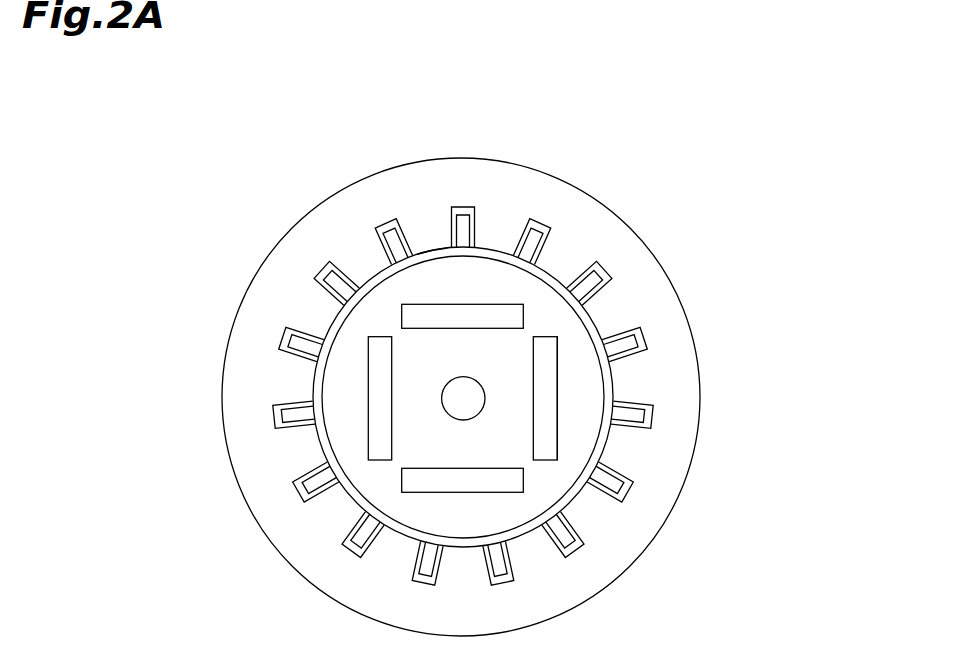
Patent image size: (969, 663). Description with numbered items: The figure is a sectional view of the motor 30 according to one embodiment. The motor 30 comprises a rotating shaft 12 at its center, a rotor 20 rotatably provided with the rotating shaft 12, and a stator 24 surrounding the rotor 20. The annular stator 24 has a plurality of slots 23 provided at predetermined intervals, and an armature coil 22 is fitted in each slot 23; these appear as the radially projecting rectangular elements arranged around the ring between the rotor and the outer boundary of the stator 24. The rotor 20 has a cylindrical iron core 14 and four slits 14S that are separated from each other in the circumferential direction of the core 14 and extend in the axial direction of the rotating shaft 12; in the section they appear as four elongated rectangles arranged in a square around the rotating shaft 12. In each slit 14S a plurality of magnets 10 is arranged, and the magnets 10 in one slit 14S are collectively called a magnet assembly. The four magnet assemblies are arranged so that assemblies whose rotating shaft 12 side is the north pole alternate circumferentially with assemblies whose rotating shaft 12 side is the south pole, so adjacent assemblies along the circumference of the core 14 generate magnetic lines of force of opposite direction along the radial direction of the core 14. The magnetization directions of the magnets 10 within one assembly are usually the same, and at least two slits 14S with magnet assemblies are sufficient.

The magnet 10 is at (548, 402).
The rotating shaft 12 is at (470, 401).
The core 14 is at (503, 357).
The slit 14S is at (541, 432).
The rotor 20 is at (790, 268).
The armature coil 22 is at (462, 227).
The slot 23 is at (397, 223).
The stator 24 is at (615, 233).
The motor 30 is at (692, 163).